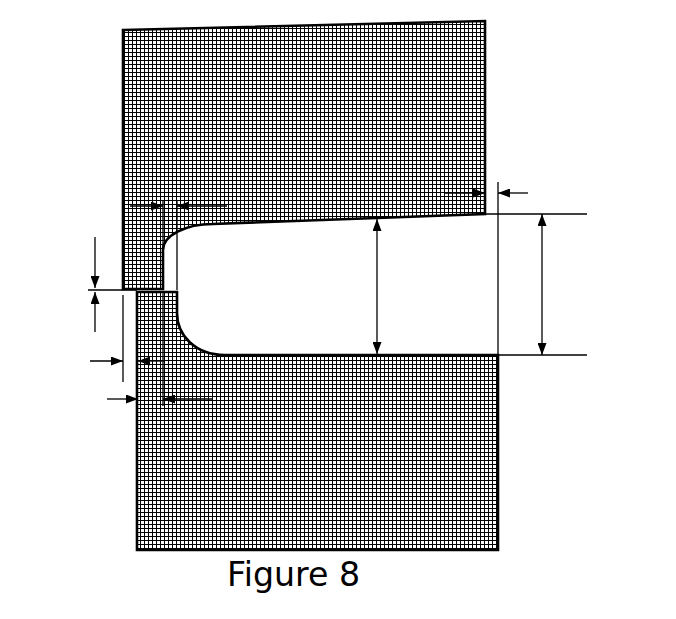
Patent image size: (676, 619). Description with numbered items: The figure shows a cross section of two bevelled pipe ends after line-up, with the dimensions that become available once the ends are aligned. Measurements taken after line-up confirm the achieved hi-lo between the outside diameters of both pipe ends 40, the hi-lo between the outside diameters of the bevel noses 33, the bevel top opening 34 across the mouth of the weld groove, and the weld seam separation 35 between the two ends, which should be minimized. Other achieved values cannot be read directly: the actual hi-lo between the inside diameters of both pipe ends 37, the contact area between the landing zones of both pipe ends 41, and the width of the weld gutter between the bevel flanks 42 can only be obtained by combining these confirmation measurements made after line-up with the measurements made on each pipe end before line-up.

The hi-lo between the outside diameters of the bevel noses 33 is at (165, 200).
The bevel top opening 34 is at (542, 284).
The weld seam separation 35 is at (90, 288).
The hi-lo between the inside diameters of both pipe ends 37 is at (124, 379).
The hi-lo between the outside diameters of both pipe ends 40 is at (490, 183).
The contact area between the landing zones of both pipe ends 41 is at (147, 405).
The width of the weld gutter between the bevel flanks 42 is at (403, 286).